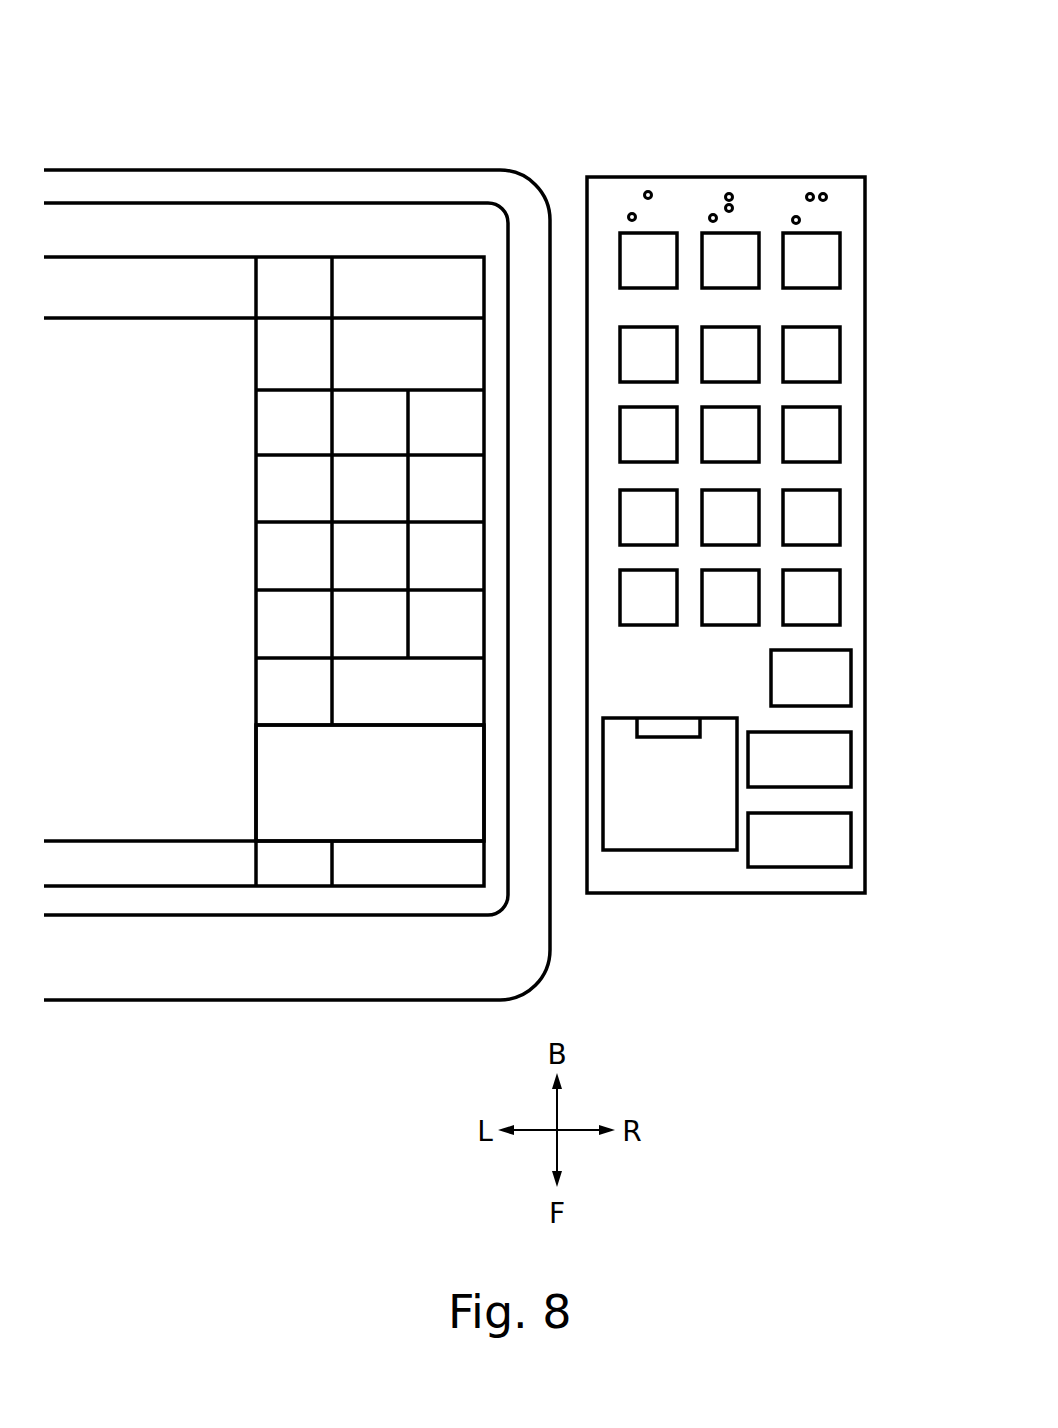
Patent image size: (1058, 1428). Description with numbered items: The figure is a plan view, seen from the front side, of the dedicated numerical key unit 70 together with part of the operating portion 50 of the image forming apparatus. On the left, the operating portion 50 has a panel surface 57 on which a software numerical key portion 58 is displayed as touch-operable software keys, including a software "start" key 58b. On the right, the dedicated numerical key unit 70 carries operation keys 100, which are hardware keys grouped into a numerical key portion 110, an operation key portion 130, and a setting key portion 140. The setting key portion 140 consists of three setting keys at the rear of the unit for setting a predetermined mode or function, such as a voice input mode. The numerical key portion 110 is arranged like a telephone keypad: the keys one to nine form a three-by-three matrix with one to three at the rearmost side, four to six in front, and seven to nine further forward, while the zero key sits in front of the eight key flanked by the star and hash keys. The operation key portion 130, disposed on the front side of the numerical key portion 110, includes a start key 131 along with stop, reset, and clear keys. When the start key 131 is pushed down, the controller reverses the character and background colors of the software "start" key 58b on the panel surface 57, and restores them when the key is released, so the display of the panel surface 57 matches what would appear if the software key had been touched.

The operating portion 50 is at (247, 119).
The panel surface 57 is at (107, 235).
The software numerical key portion 58 is at (210, 514).
The "start" key 58b is at (265, 795).
The dedicated numerical key unit 70 is at (812, 108).
The operation keys 100 is at (825, 918).
The numerical key portion 110 is at (877, 333).
The operation key portion 130 is at (877, 652).
The start key 131 is at (677, 848).
The setting key portion 140 is at (877, 240).